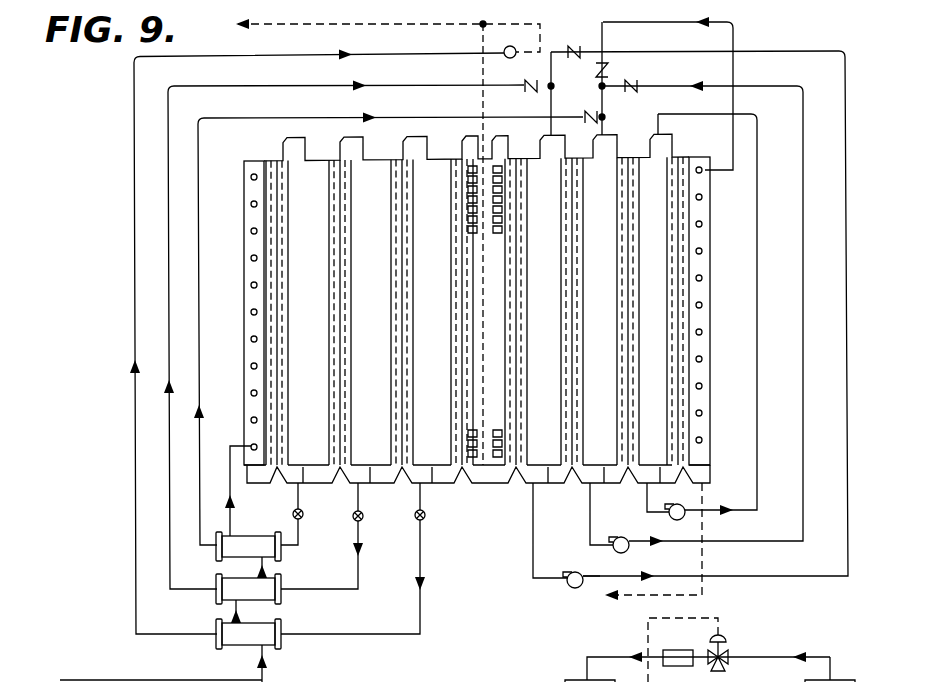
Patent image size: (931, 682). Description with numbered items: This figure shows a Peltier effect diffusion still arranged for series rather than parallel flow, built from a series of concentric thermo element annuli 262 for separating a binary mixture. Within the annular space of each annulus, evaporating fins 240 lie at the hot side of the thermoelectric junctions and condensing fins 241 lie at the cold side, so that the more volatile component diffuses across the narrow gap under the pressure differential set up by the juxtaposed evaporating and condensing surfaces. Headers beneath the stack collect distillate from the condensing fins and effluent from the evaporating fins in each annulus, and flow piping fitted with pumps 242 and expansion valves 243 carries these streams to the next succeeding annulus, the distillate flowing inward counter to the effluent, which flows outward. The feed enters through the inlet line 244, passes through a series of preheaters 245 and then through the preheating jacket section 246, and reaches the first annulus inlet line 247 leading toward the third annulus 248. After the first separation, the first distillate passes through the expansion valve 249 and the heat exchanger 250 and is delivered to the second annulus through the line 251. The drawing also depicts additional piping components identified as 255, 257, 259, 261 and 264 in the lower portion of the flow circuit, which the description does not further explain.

The evaporating fins 240 is at (268, 160).
The condensing fins 241 is at (336, 160).
The pumps 242 is at (634, 516).
The expansion valves 243 is at (364, 512).
The inlet line 244 is at (152, 679).
The preheaters 245 is at (268, 646).
The preheating jacket section 246 is at (247, 372).
The first annulus inlet line 247 is at (657, 29).
The third annulus 248 is at (640, 170).
The expansion valve 249 is at (303, 517).
The heat exchanger 250 is at (258, 540).
The line 251 is at (268, 118).
The line 255 is at (632, 656).
The tank 257 is at (565, 681).
The three-way valve 259 is at (727, 656).
The tank 261 is at (827, 659).
The thermo element annuli 262 is at (441, 156).
The control unit 264 is at (686, 643).